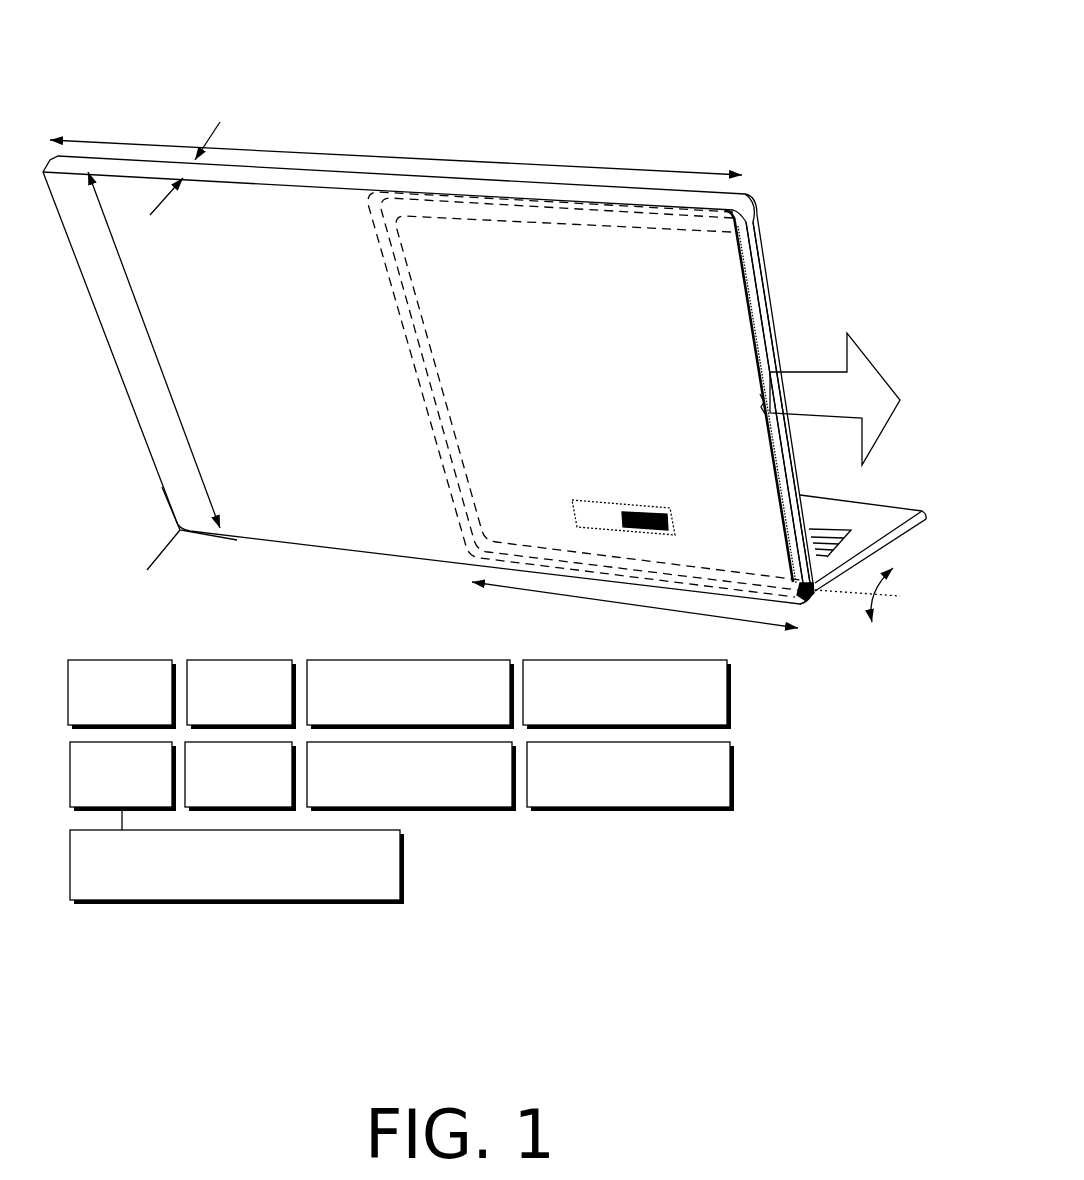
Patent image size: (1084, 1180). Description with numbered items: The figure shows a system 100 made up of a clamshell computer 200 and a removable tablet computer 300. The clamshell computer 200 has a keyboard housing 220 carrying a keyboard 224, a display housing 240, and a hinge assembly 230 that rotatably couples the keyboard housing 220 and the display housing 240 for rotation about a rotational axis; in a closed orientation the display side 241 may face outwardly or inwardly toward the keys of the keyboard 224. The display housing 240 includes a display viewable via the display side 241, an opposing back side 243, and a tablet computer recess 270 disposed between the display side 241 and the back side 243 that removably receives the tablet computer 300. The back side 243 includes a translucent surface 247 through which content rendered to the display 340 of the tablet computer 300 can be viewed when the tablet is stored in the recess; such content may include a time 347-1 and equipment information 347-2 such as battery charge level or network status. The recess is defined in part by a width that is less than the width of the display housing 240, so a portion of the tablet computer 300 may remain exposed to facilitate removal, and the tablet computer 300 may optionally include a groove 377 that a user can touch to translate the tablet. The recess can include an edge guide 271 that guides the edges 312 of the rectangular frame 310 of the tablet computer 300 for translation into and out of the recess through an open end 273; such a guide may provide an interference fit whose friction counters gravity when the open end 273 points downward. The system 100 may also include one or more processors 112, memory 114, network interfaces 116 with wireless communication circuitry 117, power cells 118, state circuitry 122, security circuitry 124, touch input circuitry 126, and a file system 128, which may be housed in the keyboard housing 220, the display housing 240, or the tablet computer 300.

The system 100 is at (716, 46).
The clamshell computer 200 is at (281, 93).
The display side 241 is at (709, 150).
The display housing 240 is at (754, 206).
The back side 243 is at (428, 380).
The translucent surface 247 is at (437, 311).
The tablet computer recess 270 is at (420, 383).
The open end 273 is at (745, 284).
The tablet computer 300 is at (764, 264).
The rectangular frame 310 is at (770, 310).
The display 340 is at (575, 407).
The time 347-1 is at (620, 347).
The equipment information 347-2 is at (622, 480).
The groove 377 is at (762, 404).
The edges 312 is at (810, 584).
The edge guide 271 is at (802, 607).
The keyboard housing 220 is at (883, 530).
The keyboard 224 is at (829, 527).
The hinge assembly 230 is at (828, 609).
The processors 112 is at (122, 694).
The memory 114 is at (241, 694).
The network interfaces 116 is at (123, 776).
The wireless communication circuitry 117 is at (237, 855).
The power cells 118 is at (240, 776).
The state circuitry 122 is at (410, 694).
The security circuitry 124 is at (627, 694).
The touch input circuitry 126 is at (411, 776).
The file system 128 is at (630, 776).